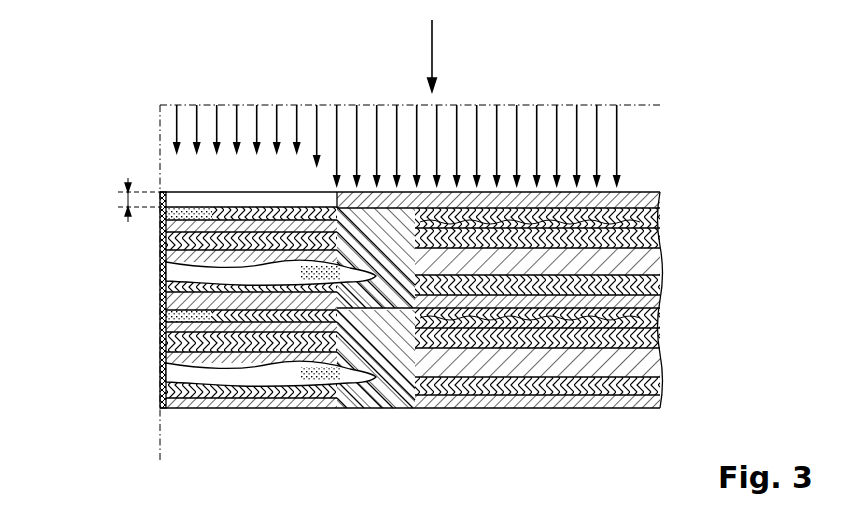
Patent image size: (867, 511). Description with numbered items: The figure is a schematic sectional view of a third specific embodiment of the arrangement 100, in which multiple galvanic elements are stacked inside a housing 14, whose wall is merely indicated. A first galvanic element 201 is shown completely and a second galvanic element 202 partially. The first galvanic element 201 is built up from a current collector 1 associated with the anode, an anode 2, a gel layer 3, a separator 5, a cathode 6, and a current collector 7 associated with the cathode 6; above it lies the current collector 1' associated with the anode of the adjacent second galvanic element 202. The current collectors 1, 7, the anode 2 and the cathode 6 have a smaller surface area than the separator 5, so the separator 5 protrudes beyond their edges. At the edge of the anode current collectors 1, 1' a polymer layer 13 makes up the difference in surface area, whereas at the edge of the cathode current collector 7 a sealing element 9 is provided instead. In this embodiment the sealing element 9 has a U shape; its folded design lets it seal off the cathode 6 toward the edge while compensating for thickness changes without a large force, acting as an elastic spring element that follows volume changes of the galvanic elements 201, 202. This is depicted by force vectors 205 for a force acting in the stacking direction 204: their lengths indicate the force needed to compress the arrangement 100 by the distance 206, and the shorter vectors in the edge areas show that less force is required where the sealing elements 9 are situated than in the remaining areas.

The current collector 1 is at (559, 277).
The current collector 1' is at (590, 430).
The anode 2 is at (656, 308).
The gel layer 3 is at (656, 322).
The separator 5 is at (656, 355).
The cathode 6 is at (654, 384).
The current collector 7 is at (628, 396).
The sealing element 9 is at (160, 262).
The polymer layer 13 is at (160, 303).
The housing 14 is at (157, 443).
The arrangement 100 is at (716, 162).
The first galvanic element 201 is at (720, 300).
The second galvanic element 202 is at (720, 193).
The stacking direction 204 is at (435, 45).
The force vectors 205 is at (618, 148).
The distance 206 is at (125, 200).